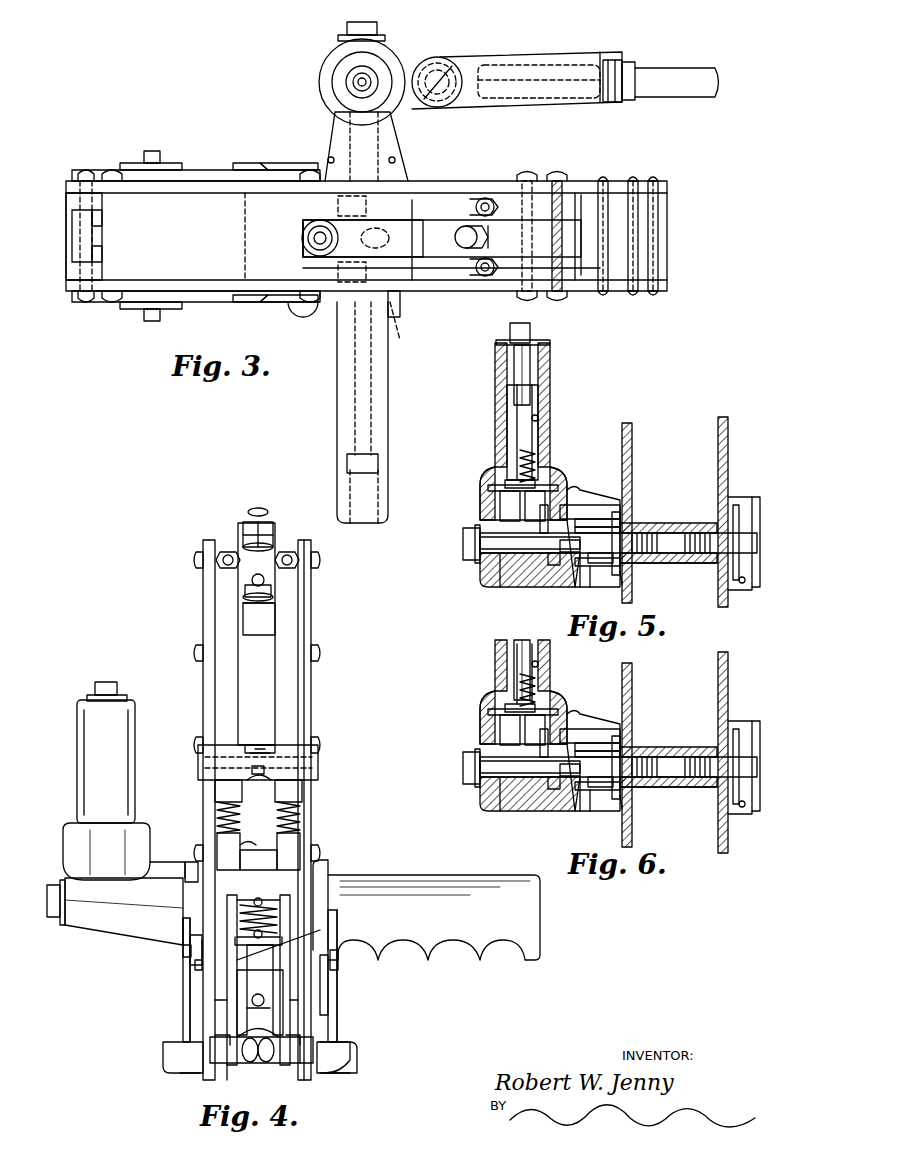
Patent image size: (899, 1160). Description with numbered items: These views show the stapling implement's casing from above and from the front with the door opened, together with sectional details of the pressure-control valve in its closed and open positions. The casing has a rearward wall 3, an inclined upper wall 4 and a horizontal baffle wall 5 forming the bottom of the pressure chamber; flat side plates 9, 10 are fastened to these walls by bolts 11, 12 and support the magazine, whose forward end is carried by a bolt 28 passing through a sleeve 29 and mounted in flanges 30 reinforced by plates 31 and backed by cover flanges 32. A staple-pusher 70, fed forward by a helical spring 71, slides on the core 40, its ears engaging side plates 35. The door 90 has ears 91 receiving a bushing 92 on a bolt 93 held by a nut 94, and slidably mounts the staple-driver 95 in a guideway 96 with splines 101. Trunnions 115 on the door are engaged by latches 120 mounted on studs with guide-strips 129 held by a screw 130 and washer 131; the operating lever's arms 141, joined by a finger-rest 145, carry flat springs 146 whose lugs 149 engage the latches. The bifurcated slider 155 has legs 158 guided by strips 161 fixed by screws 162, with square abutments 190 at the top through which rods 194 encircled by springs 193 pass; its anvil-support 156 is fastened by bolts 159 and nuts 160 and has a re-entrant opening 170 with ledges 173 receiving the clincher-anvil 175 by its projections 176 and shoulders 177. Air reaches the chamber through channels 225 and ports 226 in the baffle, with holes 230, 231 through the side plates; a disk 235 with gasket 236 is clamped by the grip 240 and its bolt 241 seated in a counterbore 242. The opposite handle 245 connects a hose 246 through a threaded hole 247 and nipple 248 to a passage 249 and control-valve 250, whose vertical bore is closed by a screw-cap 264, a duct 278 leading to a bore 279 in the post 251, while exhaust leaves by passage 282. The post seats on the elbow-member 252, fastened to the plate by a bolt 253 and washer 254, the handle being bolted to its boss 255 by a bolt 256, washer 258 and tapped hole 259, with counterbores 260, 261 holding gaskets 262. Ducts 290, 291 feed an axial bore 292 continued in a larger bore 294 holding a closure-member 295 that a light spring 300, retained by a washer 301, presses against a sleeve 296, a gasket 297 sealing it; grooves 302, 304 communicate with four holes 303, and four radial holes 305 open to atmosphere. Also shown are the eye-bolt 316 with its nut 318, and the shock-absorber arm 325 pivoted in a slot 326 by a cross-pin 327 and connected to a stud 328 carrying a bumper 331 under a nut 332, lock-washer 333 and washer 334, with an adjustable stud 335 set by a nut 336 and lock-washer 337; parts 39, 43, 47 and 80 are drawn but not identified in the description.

In FIG. 3, the rearward wall 3 is at (578, 198).
In FIG. 3, the upper wall 4 is at (436, 282).
In FIG. 4, the upper wall 4 is at (288, 680).
In FIG. 3, the horizontal wall 5 is at (245, 250).
In FIG. 5, the horizontal wall 5 is at (700, 563).
In FIG. 6, the horizontal wall 5 is at (668, 798).
In FIG. 3, the side plate 9 is at (492, 182).
In FIG. 4, the side plate 9 is at (203, 624).
In FIG. 5, the side plate 9 is at (622, 438).
In FIG. 6, the side plate 9 is at (617, 750).
In FIG. 3, the side plate 10 is at (462, 291).
In FIG. 4, the side plate 10 is at (311, 636).
In FIG. 5, the side plate 10 is at (728, 440).
In FIG. 6, the side plate 10 is at (736, 752).
In FIG. 3, the bolts 11 is at (605, 174).
In FIG. 3, the bolts 12 is at (124, 176).
In FIG. 4, the bolts 12 is at (194, 560).
In FIG. 4, the bolt 28 is at (194, 908).
In FIG. 4, the cylindrical sleeve 29 is at (195, 888).
In FIG. 4, the flanges 30 is at (238, 900).
In FIG. 4, the overlying plates 31 is at (231, 912).
In FIG. 4, the upstanding flanges 32 is at (272, 900).
In FIG. 4, the side plates 35 is at (237, 990).
In FIG. 4, the pins 39 is at (222, 1003).
In FIG. 4, the core 40 is at (338, 968).
In FIG. 4, the pivot 43 is at (262, 1005).
In FIG. 4, the pin 47 is at (256, 1010).
In FIG. 4, the staple-pusher 70 is at (250, 970).
In FIG. 4, the helical spring 71 is at (234, 940).
In FIG. 4, the lever 80 is at (322, 930).
In FIG. 3, the door 90 is at (70, 258).
In FIG. 4, the door 90 is at (234, 745).
In FIG. 3, the spaced ears 91 is at (90, 214).
In FIG. 4, the spaced ears 91 is at (216, 790).
In FIG. 3, the sleeve or bushing 92 is at (76, 198).
In FIG. 3, the bolt 93 is at (86, 172).
In FIG. 4, the bolt 93 is at (200, 760).
In FIG. 3, the nut 94 is at (84, 300).
In FIG. 4, the nut 94 is at (318, 752).
In FIG. 3, the staple-driver 95 is at (74, 236).
In FIG. 4, the staple-driver 95 is at (259, 782).
In FIG. 4, the slotted guideway 96 is at (264, 745).
In FIG. 4, the splines 101 is at (270, 749).
In FIG. 4, the trunnions 115 is at (200, 770).
In FIG. 3, the latch 120 is at (182, 175).
In FIG. 4, the latch 120 is at (192, 965).
In FIG. 4, the guide-strip 129 is at (200, 950).
In FIG. 3, the screw 130 is at (153, 152).
In FIG. 4, the screw 130 is at (196, 968).
In FIG. 3, the washer 131 is at (133, 165).
In FIG. 4, the washer 131 is at (183, 942).
In FIG. 3, the arms 141 is at (288, 165).
In FIG. 4, the arms 141 is at (183, 1005).
In FIG. 3, the cross-member or finger-rest 145 is at (304, 318).
In FIG. 4, the cross-member or finger-rest 145 is at (352, 1052).
In FIG. 3, the flat spring 146 is at (252, 163).
In FIG. 4, the flat spring 146 is at (184, 1028).
In FIG. 4, the lug 149 is at (183, 952).
In FIG. 4, the slider 155 is at (214, 1066).
In FIG. 4, the anvil-support 156 is at (298, 1066).
In FIG. 4, the legs 158 is at (334, 1088).
In FIG. 4, the transverse bolts 159 is at (190, 1075).
In FIG. 4, the nuts 160 is at (336, 1075).
In FIG. 4, the strips 161 is at (217, 840).
In FIG. 4, the screws 162 is at (196, 853).
In FIG. 4, the re-entrant opening 170 is at (274, 1034).
In FIG. 4, the shouldered ledges 173 is at (252, 1064).
In FIG. 4, the clincher-anvil 175 is at (226, 1042).
In FIG. 4, the projections 176 is at (300, 1040).
In FIG. 4, the shouldered portions 177 is at (266, 1064).
In FIG. 4, the square abutments 190 is at (242, 865).
In FIG. 4, the helical springs 193 is at (240, 818).
In FIG. 4, the rods 194 is at (242, 845).
In FIG. 3, the channels 225 is at (392, 248).
In FIG. 5, the channels 225 is at (664, 533).
In FIG. 6, the channels 225 is at (618, 743).
In FIG. 3, the ports 226 is at (388, 238).
In FIG. 5, the ports 226 is at (676, 533).
In FIG. 6, the ports 226 is at (668, 753).
In FIG. 3, the holes 230 is at (338, 205).
In FIG. 3, the holes 231 is at (412, 222).
In FIG. 3, the circular disk 235 is at (400, 305).
In FIG. 4, the circular disk 235 is at (328, 870).
In FIG. 5, the circular disk 235 is at (735, 497).
In FIG. 6, the circular disk 235 is at (745, 748).
In FIG. 3, the annular gasket 236 is at (396, 338).
In FIG. 5, the annular gasket 236 is at (740, 590).
In FIG. 6, the annular gasket 236 is at (747, 814).
In FIG. 3, the handle-member or grip 240 is at (340, 408).
In FIG. 4, the handle-member or grip 240 is at (528, 920).
In FIG. 5, the handle-member or grip 240 is at (757, 595).
In FIG. 6, the handle-member or grip 240 is at (752, 786).
In FIG. 3, the axial bolt 241 is at (354, 384).
In FIG. 5, the axial bolt 241 is at (748, 545).
In FIG. 6, the axial bolt 241 is at (753, 753).
In FIG. 3, the counterbore 242 is at (372, 514).
In FIG. 3, the second handle-member 245 is at (494, 56).
In FIG. 4, the second handle-member 245 is at (72, 736).
In FIG. 5, the second handle-member 245 is at (486, 440).
In FIG. 6, the second handle-member 245 is at (507, 697).
In FIG. 3, the hose 246 is at (684, 90).
In FIG. 3, the tapered and threaded hole 247 is at (612, 104).
In FIG. 3, the nipple 248 is at (630, 100).
In FIG. 3, the passage 249 is at (562, 62).
In FIG. 3, the control-valve 250 is at (458, 64).
In FIG. 3, the vertical post 251 is at (322, 92).
In FIG. 4, the vertical post 251 is at (78, 776).
In FIG. 5, the vertical post 251 is at (497, 408).
In FIG. 6, the vertical post 251 is at (543, 665).
In FIG. 4, the tapered elbow-member 252 is at (102, 932).
In FIG. 5, the tapered elbow-member 252 is at (518, 585).
In FIG. 6, the tapered elbow-member 252 is at (530, 805).
In FIG. 3, the axial bolt 253 is at (378, 27).
In FIG. 4, the axial bolt 253 is at (47, 905).
In FIG. 5, the axial bolt 253 is at (466, 555).
In FIG. 6, the axial bolt 253 is at (458, 775).
In FIG. 3, the washer 254 is at (338, 38).
In FIG. 4, the washer 254 is at (61, 922).
In FIG. 5, the washer 254 is at (477, 562).
In FIG. 6, the washer 254 is at (460, 782).
In FIG. 4, the boss 255 is at (66, 858).
In FIG. 5, the boss 255 is at (488, 490).
In FIG. 6, the boss 255 is at (500, 717).
In FIG. 3, the axial bolt 256 is at (348, 70).
In FIG. 4, the axial bolt 256 is at (100, 682).
In FIG. 5, the axial bolt 256 is at (524, 372).
In FIG. 6, the axial bolt 256 is at (502, 658).
In FIG. 3, the washer 258 is at (352, 82).
In FIG. 4, the washer 258 is at (88, 696).
In FIG. 5, the washer 258 is at (530, 334).
In FIG. 5, the tapped hole 259 is at (505, 520).
In FIG. 6, the tapped hole 259 is at (488, 727).
In FIG. 5, the counterbore 260 is at (484, 478).
In FIG. 6, the counterbore 260 is at (509, 714).
In FIG. 5, the counterbore 261 is at (622, 570).
In FIG. 6, the counterbore 261 is at (642, 806).
In FIG. 5, the annular gaskets 262 is at (552, 500).
In FIG. 6, the annular gaskets 262 is at (610, 739).
In FIG. 3, the screw-cap 264 is at (430, 58).
In FIG. 3, the horizontal duct 278 is at (402, 112).
In FIG. 5, the horizontal duct 278 is at (545, 405).
In FIG. 5, the vertical bore 279 is at (540, 420).
In FIG. 6, the vertical bore 279 is at (554, 674).
In FIG. 3, the exhaust passage 282 is at (524, 98).
In FIG. 5, the channel or duct 290 is at (510, 508).
In FIG. 6, the channel or duct 290 is at (493, 730).
In FIG. 5, the channel or duct 291 is at (560, 520).
In FIG. 6, the channel or duct 291 is at (559, 709).
In FIG. 5, the axial bore 292 is at (492, 585).
In FIG. 6, the axial bore 292 is at (523, 800).
In FIG. 5, the larger bore 294 is at (596, 566).
In FIG. 6, the larger bore 294 is at (566, 806).
In FIG. 5, the closure-member 295 is at (552, 565).
In FIG. 6, the closure-member 295 is at (566, 806).
In FIG. 5, the sleeve 296 is at (505, 585).
In FIG. 6, the sleeve 296 is at (496, 807).
In FIG. 5, the annular gasket 297 is at (542, 560).
In FIG. 6, the annular gasket 297 is at (568, 725).
In FIG. 5, the helical spring 300 is at (585, 505).
In FIG. 6, the helical spring 300 is at (590, 711).
In FIG. 5, the washer 301 is at (625, 530).
In FIG. 6, the washer 301 is at (624, 772).
In FIG. 5, the annular groove 302 is at (576, 575).
In FIG. 6, the annular groove 302 is at (563, 813).
In FIG. 5, the drilled holes or ducts 303 is at (595, 519).
In FIG. 6, the drilled holes or ducts 303 is at (622, 773).
In FIG. 5, the second annular groove 304 is at (588, 580).
In FIG. 6, the second annular groove 304 is at (598, 819).
In FIG. 3, the holes 305 is at (328, 156).
In FIG. 5, the holes 305 is at (614, 512).
In FIG. 6, the holes 305 is at (614, 746).
In FIG. 3, the eye-bolt 316 is at (474, 206).
In FIG. 4, the eye-bolt 316 is at (228, 555).
In FIG. 3, the nut 318 is at (492, 208).
In FIG. 4, the nut 318 is at (220, 558).
In FIG. 3, the arm or lever 325 is at (437, 226).
In FIG. 4, the arm or lever 325 is at (273, 575).
In FIG. 3, the slot 326 is at (582, 280).
In FIG. 3, the cross-pin 327 is at (560, 174).
In FIG. 3, the stud 328 is at (310, 234).
In FIG. 4, the stud 328 is at (262, 574).
In FIG. 3, the bumper 331 is at (314, 222).
In FIG. 4, the bumper 331 is at (248, 620).
In FIG. 3, the nut 332 is at (312, 240).
In FIG. 4, the nut 332 is at (246, 587).
In FIG. 4, the lock-washer 333 is at (246, 597).
In FIG. 3, the second washer 334 is at (314, 246).
In FIG. 4, the second washer 334 is at (246, 604).
In FIG. 3, the adjustable stud 335 is at (462, 244).
In FIG. 4, the adjustable stud 335 is at (262, 509).
In FIG. 3, the nut 336 is at (486, 236).
In FIG. 4, the nut 336 is at (274, 520).
In FIG. 3, the lock-washer 337 is at (489, 243).
In FIG. 4, the lock-washer 337 is at (276, 540).